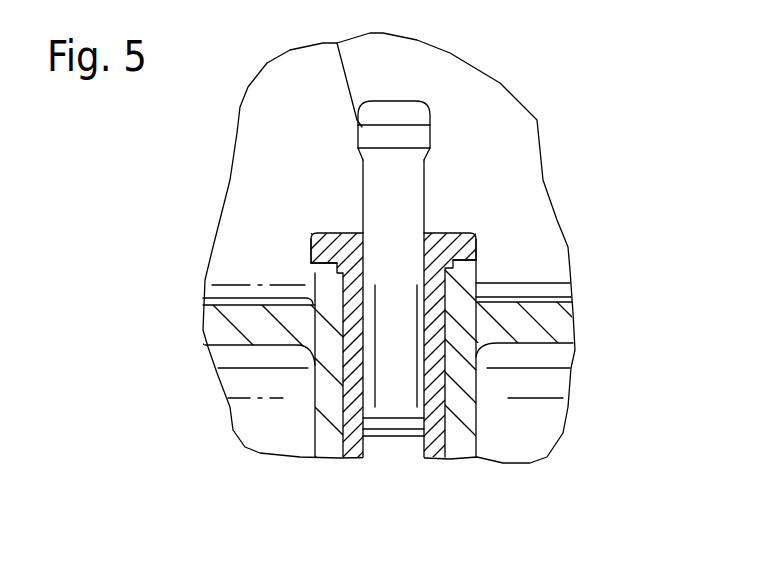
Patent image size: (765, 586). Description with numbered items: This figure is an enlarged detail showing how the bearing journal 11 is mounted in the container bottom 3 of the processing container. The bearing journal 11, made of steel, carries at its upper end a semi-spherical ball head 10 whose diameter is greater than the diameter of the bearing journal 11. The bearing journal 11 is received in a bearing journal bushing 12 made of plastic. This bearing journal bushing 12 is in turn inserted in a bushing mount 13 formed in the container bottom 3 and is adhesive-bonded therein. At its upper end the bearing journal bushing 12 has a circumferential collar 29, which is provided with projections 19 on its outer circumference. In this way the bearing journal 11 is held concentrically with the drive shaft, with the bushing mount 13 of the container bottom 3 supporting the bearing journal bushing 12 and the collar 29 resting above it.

The container bottom 3 is at (557, 328).
The ball head 10 is at (407, 113).
The bearing journal 11 is at (408, 185).
The bearing journal bushing 12 is at (353, 398).
The bushing mount 13 is at (462, 424).
The projections 19 is at (308, 258).
The collar 29 is at (438, 228).